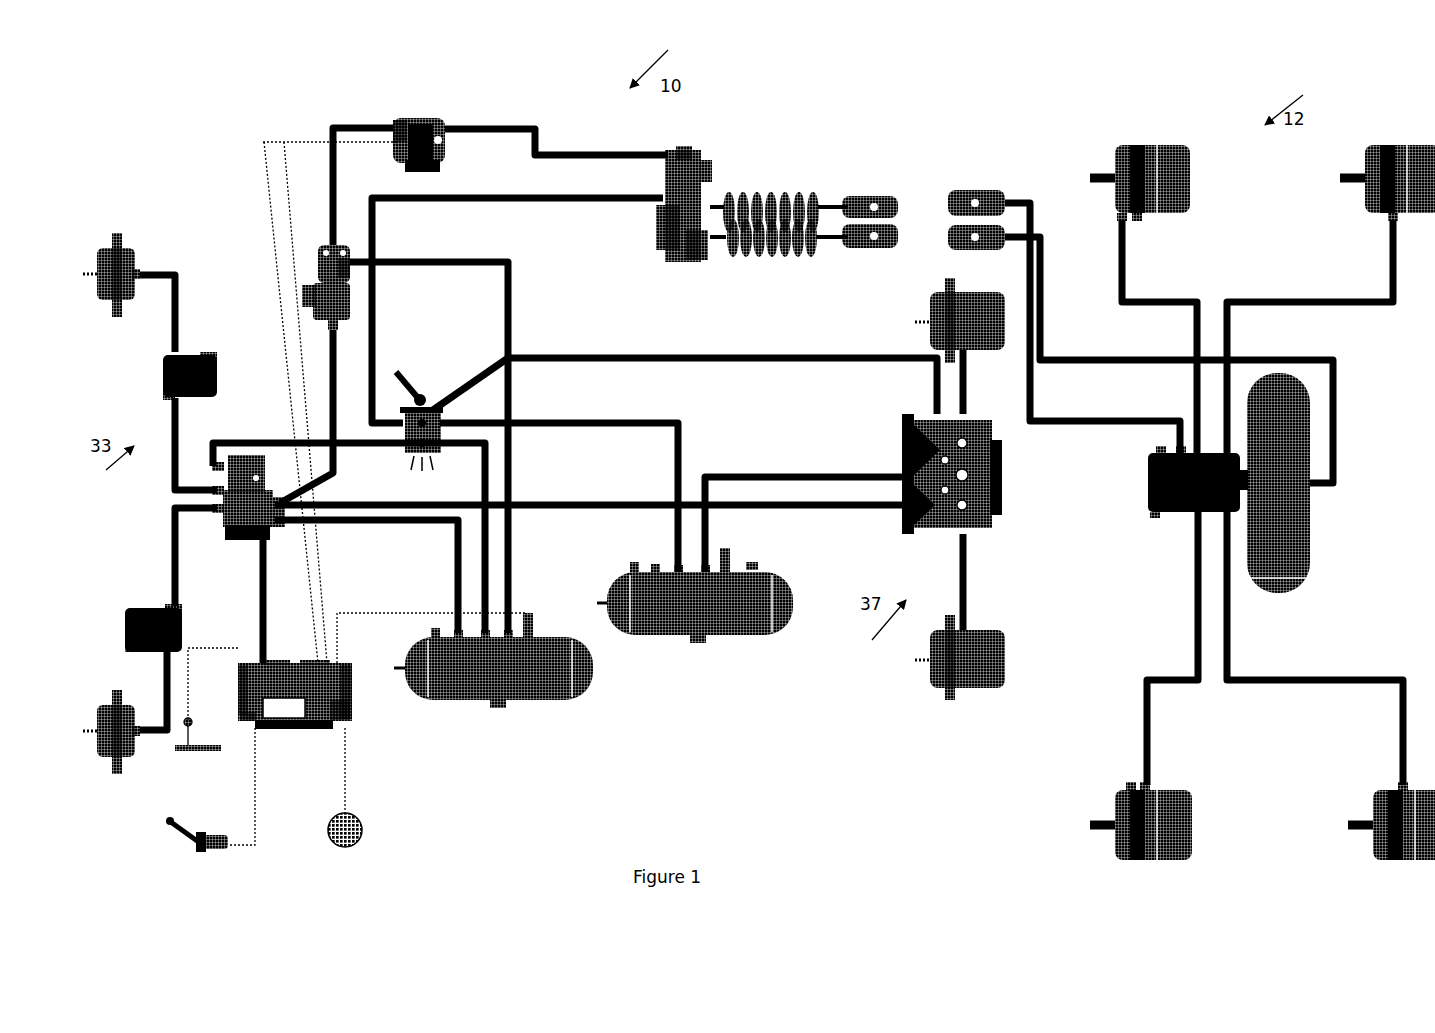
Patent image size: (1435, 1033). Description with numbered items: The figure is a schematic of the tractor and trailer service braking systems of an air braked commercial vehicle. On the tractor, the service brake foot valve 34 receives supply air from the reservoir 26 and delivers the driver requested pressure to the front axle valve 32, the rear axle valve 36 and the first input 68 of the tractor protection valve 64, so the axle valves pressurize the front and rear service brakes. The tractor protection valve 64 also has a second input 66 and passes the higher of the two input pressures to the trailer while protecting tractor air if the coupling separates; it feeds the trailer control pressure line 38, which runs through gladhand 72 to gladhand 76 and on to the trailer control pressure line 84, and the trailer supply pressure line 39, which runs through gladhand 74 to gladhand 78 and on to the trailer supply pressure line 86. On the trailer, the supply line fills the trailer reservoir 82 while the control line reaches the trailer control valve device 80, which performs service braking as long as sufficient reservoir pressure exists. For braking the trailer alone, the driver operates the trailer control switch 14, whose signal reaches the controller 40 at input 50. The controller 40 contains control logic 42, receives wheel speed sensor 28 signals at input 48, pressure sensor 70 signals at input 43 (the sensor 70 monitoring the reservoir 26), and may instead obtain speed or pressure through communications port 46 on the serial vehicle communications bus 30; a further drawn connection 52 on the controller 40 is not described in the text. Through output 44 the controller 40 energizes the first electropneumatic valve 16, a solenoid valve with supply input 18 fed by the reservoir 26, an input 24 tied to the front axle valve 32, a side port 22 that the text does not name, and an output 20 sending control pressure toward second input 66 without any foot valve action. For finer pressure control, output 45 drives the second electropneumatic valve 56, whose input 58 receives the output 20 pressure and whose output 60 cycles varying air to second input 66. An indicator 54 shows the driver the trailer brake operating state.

The trailer control switch 14 is at (217, 851).
The first electropneumatic valve 16 is at (350, 303).
The supply input 18 is at (346, 262).
The output 20 is at (322, 250).
The port 22 is at (303, 293).
The input 24 is at (335, 326).
The reservoir 26 is at (588, 695).
The wheel speed sensor 28 is at (196, 722).
The serial vehicle communications bus 30 is at (266, 583).
The front axle valve 32 is at (250, 456).
The service brake foot valve 34 is at (427, 388).
The rear axle valve 36 is at (984, 520).
The trailer control pressure line 38 is at (778, 194).
The trailer supply pressure line 39 is at (780, 252).
The controller 40 is at (347, 716).
The control logic 42 is at (280, 729).
The input 43 is at (352, 680).
The output 44 is at (337, 613).
The output 45 is at (320, 660).
The communications port 46 is at (300, 657).
The input 48 is at (243, 662).
The input 50 is at (257, 730).
The output 52 is at (347, 716).
The indicator 54 is at (358, 843).
The second electropneumatic valve 56 is at (425, 115).
The input 58 is at (394, 124).
The output 60 is at (446, 142).
The tractor protection valve 64 is at (700, 252).
The second input 66 is at (690, 150).
The first input 68 is at (660, 212).
The pressure sensor 70 is at (534, 618).
The gladhand 72 is at (886, 198).
The gladhand 74 is at (878, 248).
The gladhand 76 is at (985, 192).
The gladhand 78 is at (985, 250).
The trailer control valve device 80 is at (1168, 514).
The trailer reservoir 82 is at (1308, 560).
The trailer control pressure line 84 is at (1052, 425).
The trailer supply pressure line 86 is at (1093, 358).